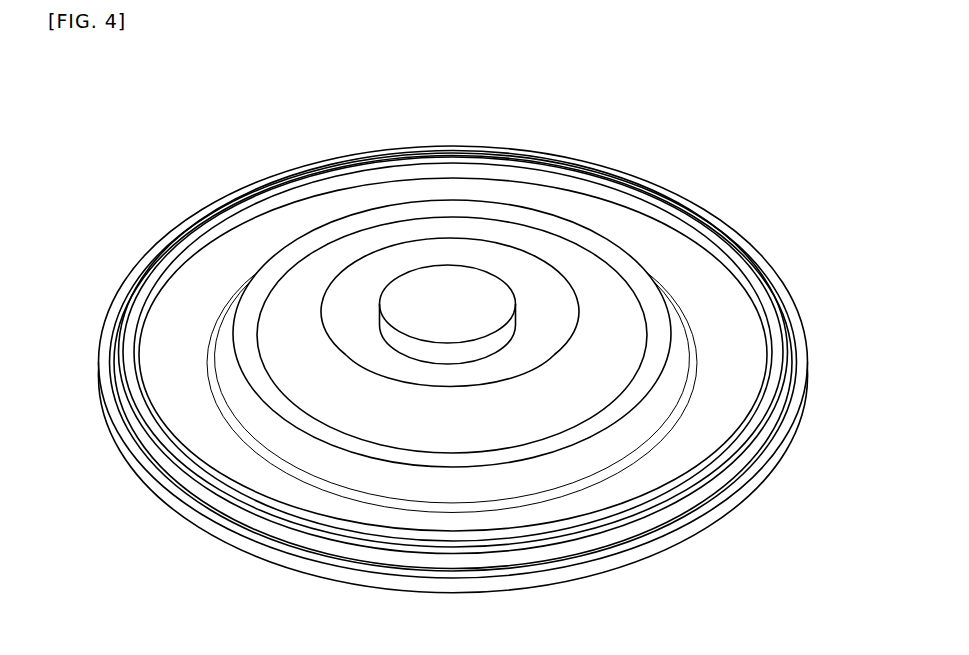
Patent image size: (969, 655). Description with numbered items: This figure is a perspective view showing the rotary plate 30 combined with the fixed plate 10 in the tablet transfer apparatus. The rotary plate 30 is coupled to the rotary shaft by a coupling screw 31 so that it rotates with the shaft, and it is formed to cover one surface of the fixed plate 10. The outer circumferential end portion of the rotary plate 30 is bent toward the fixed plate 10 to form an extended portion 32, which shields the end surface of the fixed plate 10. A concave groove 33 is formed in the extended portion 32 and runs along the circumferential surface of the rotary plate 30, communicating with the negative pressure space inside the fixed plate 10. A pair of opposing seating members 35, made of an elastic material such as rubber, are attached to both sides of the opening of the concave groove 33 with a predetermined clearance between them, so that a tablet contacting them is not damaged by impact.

The fixed plate 10 is at (698, 533).
The rotary plate 30 is at (722, 222).
The coupling screw 31 is at (471, 280).
The extended portion 32 is at (773, 440).
The concave groove 33 is at (797, 373).
The seating member 35 is at (797, 322).